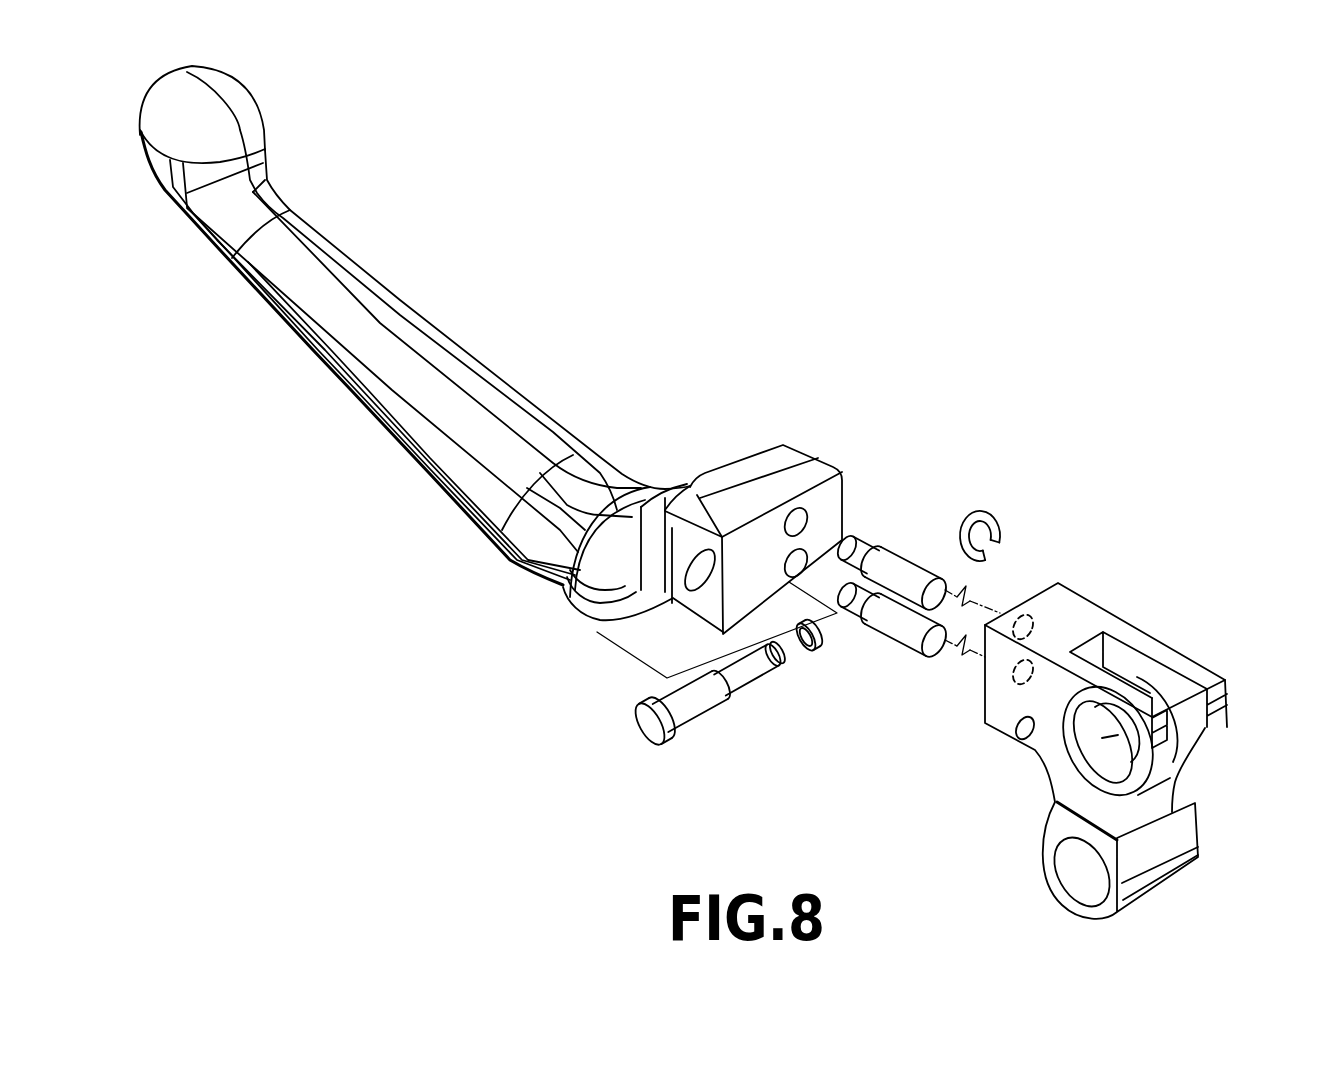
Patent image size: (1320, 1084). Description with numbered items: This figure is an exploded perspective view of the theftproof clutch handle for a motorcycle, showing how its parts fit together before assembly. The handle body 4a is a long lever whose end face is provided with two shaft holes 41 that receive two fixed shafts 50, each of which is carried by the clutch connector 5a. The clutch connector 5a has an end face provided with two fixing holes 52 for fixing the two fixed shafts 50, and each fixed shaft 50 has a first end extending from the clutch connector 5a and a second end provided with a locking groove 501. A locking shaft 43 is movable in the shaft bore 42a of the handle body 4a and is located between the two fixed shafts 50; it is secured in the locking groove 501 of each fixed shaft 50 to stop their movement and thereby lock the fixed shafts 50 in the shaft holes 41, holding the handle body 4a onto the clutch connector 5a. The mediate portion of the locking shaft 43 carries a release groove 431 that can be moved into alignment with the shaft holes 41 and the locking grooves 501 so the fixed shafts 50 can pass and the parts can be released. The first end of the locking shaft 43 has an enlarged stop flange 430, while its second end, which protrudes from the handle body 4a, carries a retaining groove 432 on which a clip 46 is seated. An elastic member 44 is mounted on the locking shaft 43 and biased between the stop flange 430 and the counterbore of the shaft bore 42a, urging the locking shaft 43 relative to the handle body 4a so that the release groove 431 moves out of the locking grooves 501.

The handle body 4a is at (482, 372).
The shaft hole 41 is at (790, 560).
The shaft bore 42a is at (703, 573).
The locking shaft 43 is at (752, 690).
The stop flange 430 is at (650, 723).
The release groove 431 is at (727, 690).
The retaining groove 432 is at (777, 672).
The elastic member 44 is at (820, 652).
The e-clip 46 is at (1000, 550).
The fixed shaft 50 is at (910, 575).
The locking groove 501 is at (870, 553).
The fixing hole 52 is at (1035, 608).
The clutch connector 5a is at (1077, 612).